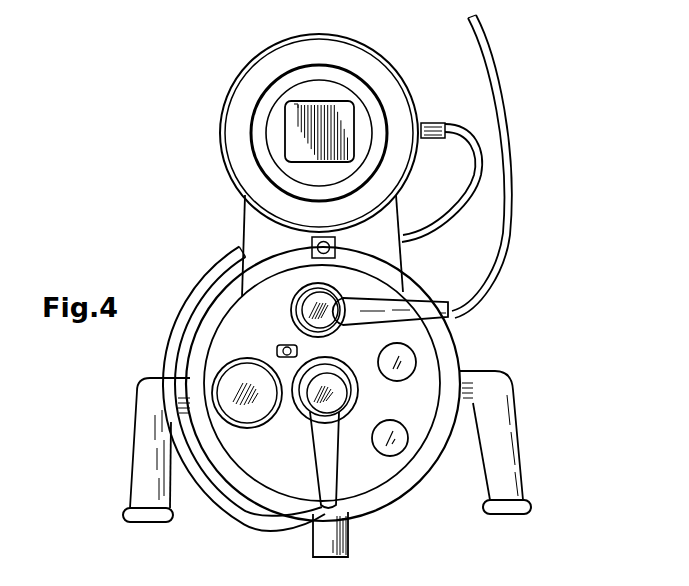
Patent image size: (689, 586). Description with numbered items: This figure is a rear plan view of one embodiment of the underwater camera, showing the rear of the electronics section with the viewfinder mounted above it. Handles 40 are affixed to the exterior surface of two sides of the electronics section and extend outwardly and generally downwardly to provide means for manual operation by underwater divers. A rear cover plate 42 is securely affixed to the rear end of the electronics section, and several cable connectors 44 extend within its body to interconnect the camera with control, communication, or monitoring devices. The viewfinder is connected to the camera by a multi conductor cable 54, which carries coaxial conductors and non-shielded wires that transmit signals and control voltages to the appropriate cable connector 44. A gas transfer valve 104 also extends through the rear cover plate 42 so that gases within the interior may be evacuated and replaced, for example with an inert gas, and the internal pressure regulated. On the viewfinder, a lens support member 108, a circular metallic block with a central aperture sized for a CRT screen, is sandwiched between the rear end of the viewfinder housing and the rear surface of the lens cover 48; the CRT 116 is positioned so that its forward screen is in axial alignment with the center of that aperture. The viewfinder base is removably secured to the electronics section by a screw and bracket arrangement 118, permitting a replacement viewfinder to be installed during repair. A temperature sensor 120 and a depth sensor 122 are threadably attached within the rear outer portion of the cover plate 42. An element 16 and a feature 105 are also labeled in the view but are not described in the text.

The cable 16 is at (509, 122).
The handles 40 is at (138, 457).
The rear cover plate 42 is at (230, 310).
The cable connectors 44 is at (303, 310).
The lens cover 48 is at (373, 63).
The multi conductor cable 54 is at (437, 230).
The gas transfer valve 104 is at (276, 350).
The bezel ring 105 is at (377, 110).
The lens support member 108 is at (275, 130).
The CRT 116 is at (289, 103).
The screw and bracket arrangement 118 is at (400, 258).
The temperature sensor 120 is at (410, 355).
The depth sensor 122 is at (388, 453).